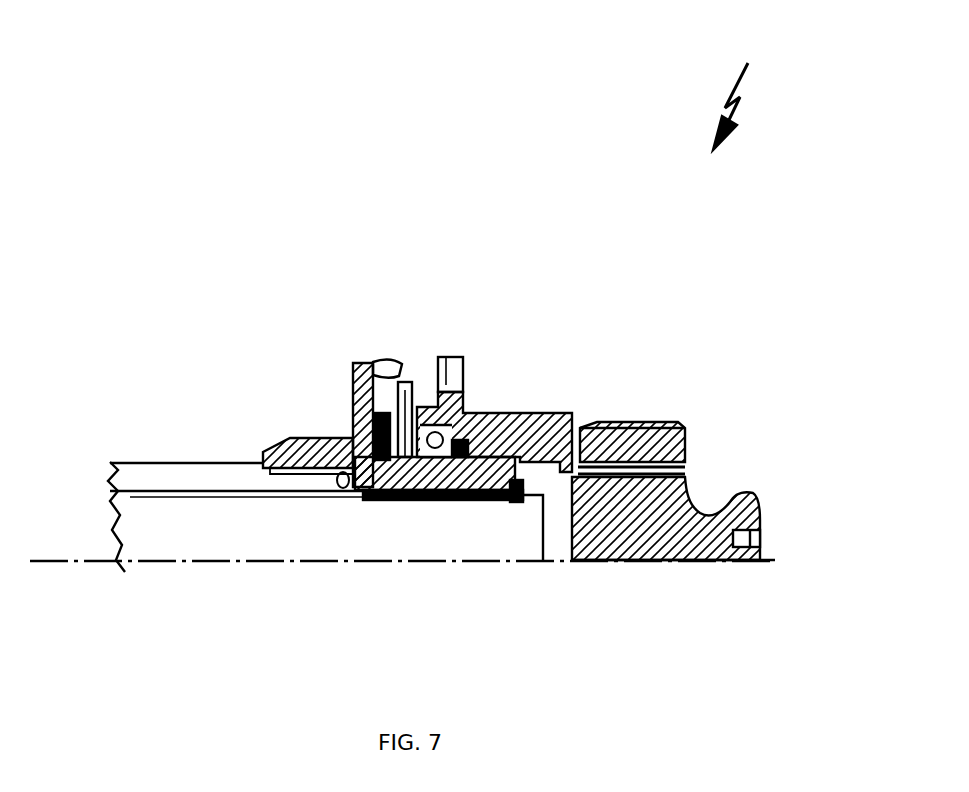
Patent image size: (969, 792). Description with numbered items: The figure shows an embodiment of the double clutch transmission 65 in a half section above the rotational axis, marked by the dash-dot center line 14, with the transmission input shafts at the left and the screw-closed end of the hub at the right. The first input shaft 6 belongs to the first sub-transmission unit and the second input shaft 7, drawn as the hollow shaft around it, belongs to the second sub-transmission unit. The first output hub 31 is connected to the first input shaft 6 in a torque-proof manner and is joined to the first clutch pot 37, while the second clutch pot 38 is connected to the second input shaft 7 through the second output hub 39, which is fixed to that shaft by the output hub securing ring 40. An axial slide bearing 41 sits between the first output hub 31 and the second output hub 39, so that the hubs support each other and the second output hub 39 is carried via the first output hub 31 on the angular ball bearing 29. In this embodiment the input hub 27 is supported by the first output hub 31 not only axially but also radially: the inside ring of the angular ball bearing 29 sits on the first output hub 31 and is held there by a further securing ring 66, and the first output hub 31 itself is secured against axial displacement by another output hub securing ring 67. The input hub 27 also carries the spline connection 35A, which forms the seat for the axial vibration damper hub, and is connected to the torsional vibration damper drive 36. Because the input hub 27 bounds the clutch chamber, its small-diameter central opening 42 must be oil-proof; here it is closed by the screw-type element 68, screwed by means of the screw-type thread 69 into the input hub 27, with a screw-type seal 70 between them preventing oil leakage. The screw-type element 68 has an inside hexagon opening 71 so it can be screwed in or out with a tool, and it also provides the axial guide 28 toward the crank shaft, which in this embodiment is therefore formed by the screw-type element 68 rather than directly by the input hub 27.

The axis of rotation 14 is at (62, 561).
The second input shaft 7 is at (152, 472).
The first input shaft 6 is at (181, 534).
The second output hub 39 is at (268, 472).
The output hub securing ring 40 is at (321, 474).
The second clutch pot 38 is at (377, 368).
The axial slide bearing 41 is at (372, 500).
The first clutch pot 37 is at (427, 390).
The torsional vibration damper drive 36 is at (447, 357).
The input hub 27 is at (467, 408).
The angular ball bearing 29 is at (428, 500).
The first output hub 31 is at (397, 500).
The securing ring 66 is at (470, 500).
The output hub securing ring 67 is at (517, 503).
The central opening 42 is at (560, 530).
The screw-type seal 70 is at (583, 430).
The spline connection 35A is at (627, 427).
The screw-type thread 69 is at (658, 545).
The screw-type element 68 is at (692, 543).
The axial guide 28 is at (753, 490).
The inside hexagon opening 71 is at (750, 553).
The double clutch transmission 65 is at (762, 90).